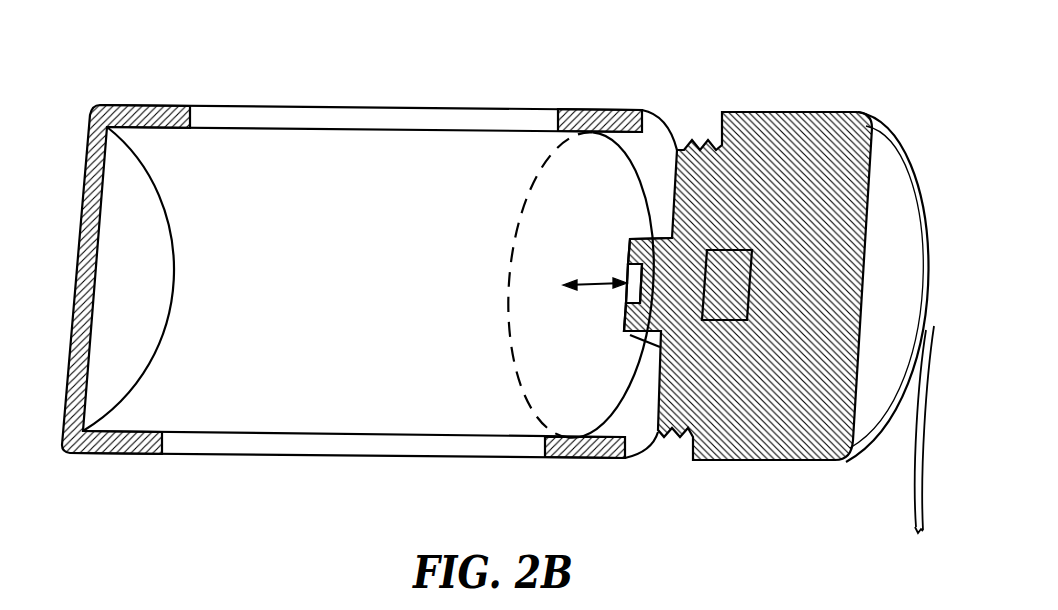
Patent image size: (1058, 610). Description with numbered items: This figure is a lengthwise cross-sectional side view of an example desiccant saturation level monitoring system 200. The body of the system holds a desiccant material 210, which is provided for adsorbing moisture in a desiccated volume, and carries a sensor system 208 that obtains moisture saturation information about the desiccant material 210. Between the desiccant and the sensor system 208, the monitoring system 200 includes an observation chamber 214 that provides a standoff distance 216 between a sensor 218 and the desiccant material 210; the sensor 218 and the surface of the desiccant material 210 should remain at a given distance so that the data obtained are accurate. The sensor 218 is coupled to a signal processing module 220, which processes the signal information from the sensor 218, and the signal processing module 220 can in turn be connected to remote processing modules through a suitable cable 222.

The desiccant saturation level monitoring system 200 is at (520, 92).
The sensor system 208 is at (792, 133).
The desiccant material 210 is at (330, 312).
The observation chamber 214 is at (625, 189).
The standoff distance 216 is at (598, 290).
The sensor 218 is at (627, 284).
The signal processing module 220 is at (731, 287).
The cable 222 is at (912, 500).